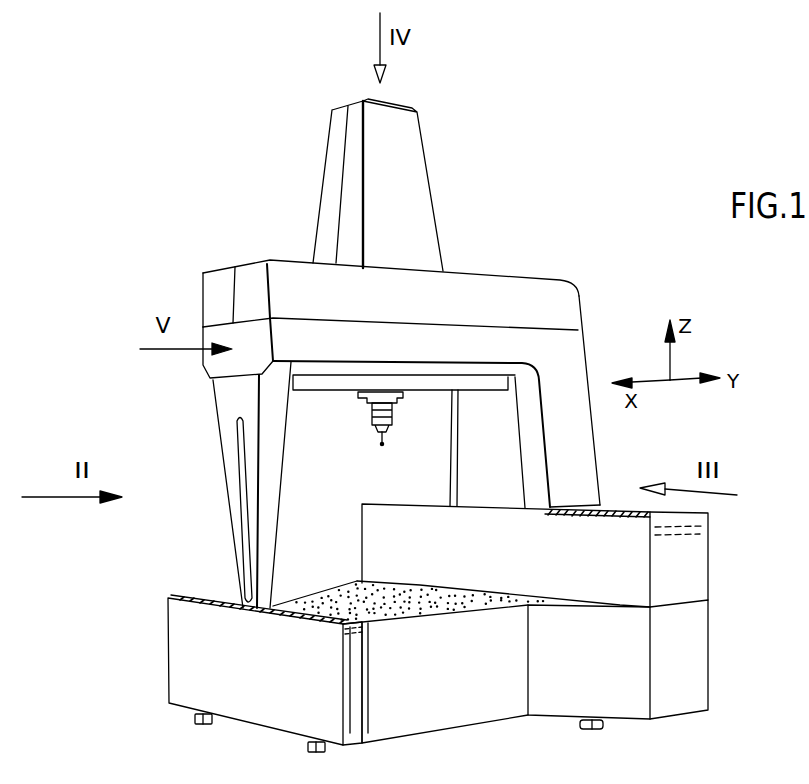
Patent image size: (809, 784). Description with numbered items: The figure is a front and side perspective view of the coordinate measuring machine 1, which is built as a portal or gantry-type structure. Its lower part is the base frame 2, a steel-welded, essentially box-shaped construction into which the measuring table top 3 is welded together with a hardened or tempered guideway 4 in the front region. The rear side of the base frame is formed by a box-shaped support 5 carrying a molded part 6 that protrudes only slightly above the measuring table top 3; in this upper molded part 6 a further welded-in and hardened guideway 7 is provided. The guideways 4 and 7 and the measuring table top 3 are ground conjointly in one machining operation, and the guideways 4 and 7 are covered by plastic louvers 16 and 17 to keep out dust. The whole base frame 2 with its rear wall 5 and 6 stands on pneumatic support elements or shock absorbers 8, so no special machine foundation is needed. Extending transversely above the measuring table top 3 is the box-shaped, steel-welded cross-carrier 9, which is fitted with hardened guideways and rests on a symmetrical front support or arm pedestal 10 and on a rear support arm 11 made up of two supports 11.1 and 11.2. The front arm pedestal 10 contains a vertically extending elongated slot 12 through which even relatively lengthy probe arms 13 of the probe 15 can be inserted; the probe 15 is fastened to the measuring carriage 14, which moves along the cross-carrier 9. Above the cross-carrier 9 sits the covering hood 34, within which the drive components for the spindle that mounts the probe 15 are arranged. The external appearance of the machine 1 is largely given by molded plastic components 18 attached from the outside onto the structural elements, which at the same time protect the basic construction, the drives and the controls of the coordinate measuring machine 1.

The coordinate measuring machine 1 is at (509, 222).
The base frame 2 is at (462, 698).
The measuring table top 3 is at (390, 605).
The guideway 4 is at (350, 638).
The box-shaped support 5 is at (697, 668).
The molded part 6 is at (695, 583).
The guideway 7 is at (712, 538).
The pneumatic support elements 8 is at (212, 727).
The cross-carrier 9 is at (522, 343).
The front support arm pedestal 10 is at (225, 413).
The rear support arm 11 is at (595, 390).
The support 11.1 is at (593, 460).
The support 11.2 is at (455, 452).
The elongated slot 12 is at (240, 497).
The probe arm 13 is at (374, 428).
The measuring carriage 14 is at (358, 394).
The probe 15 is at (395, 414).
The plastic louver 16 is at (198, 603).
The plastic louver 17 is at (620, 517).
The molded plastic components 18 is at (507, 292).
The covering hood 34 is at (417, 170).